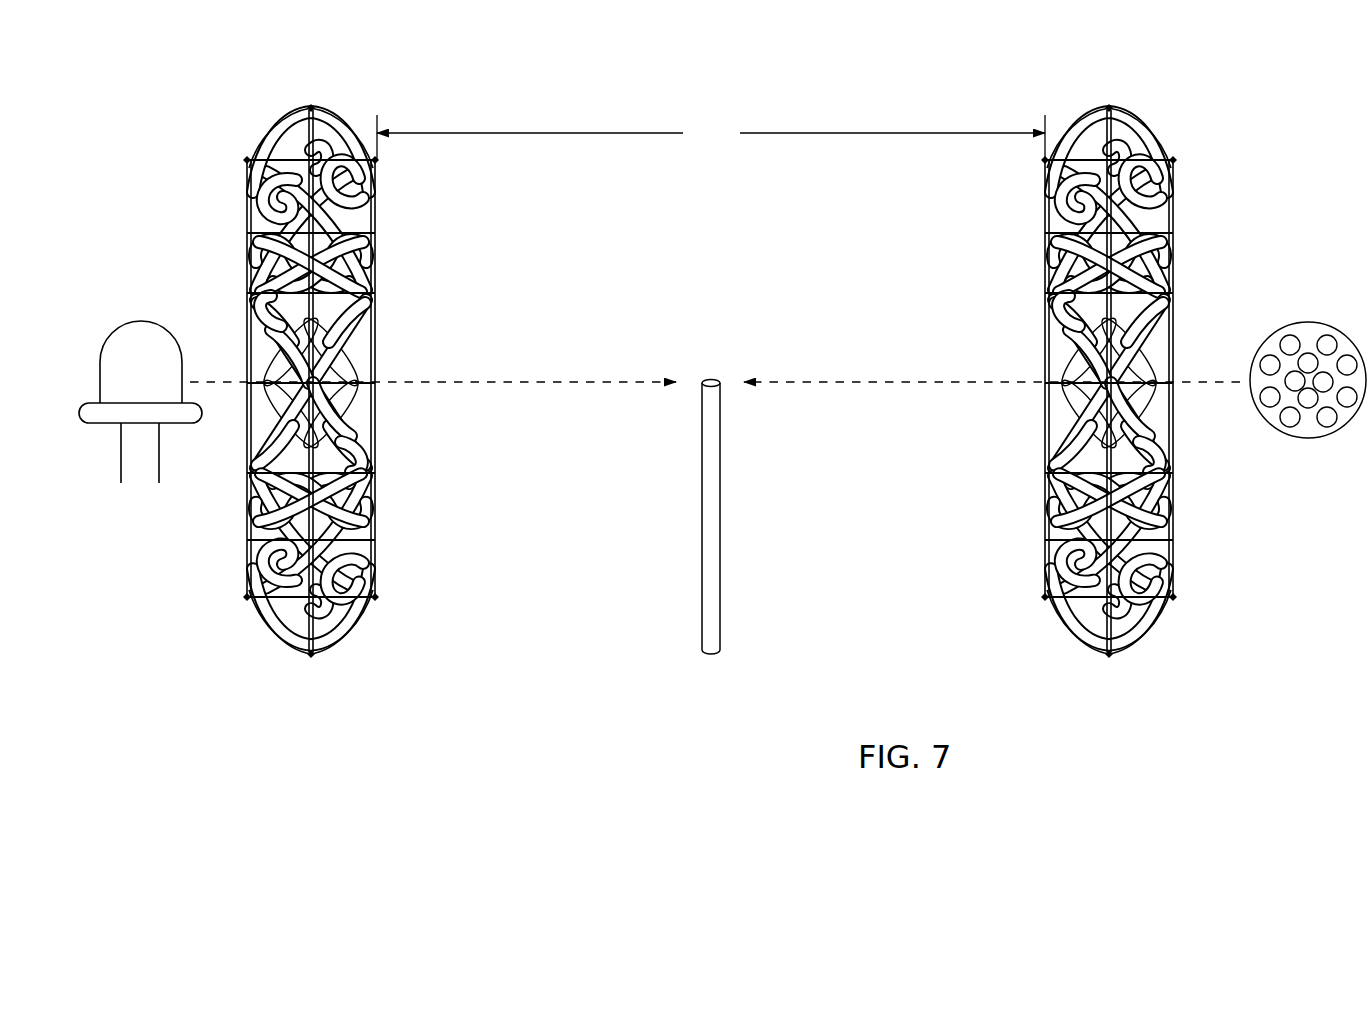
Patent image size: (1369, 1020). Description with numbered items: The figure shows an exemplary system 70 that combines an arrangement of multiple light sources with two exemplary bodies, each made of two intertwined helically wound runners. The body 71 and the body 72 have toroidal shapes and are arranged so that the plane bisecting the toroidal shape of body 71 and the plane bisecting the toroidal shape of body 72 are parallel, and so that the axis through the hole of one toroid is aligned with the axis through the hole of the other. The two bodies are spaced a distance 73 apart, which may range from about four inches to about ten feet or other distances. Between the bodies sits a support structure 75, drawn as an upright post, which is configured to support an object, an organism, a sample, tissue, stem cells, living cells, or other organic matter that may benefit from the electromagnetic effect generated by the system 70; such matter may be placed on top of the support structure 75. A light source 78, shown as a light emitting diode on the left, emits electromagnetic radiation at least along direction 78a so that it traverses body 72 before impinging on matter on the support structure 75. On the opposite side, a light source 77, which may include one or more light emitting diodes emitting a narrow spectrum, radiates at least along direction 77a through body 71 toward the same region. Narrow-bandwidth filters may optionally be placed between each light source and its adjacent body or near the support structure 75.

The system 70 is at (594, 724).
The body 71 is at (1028, 632).
The body 72 is at (362, 636).
The distance 73 is at (711, 137).
The support structure 75 is at (686, 434).
The light source 77 is at (1302, 450).
The direction 77a is at (992, 368).
The light source 78 is at (146, 500).
The direction 78a is at (433, 368).